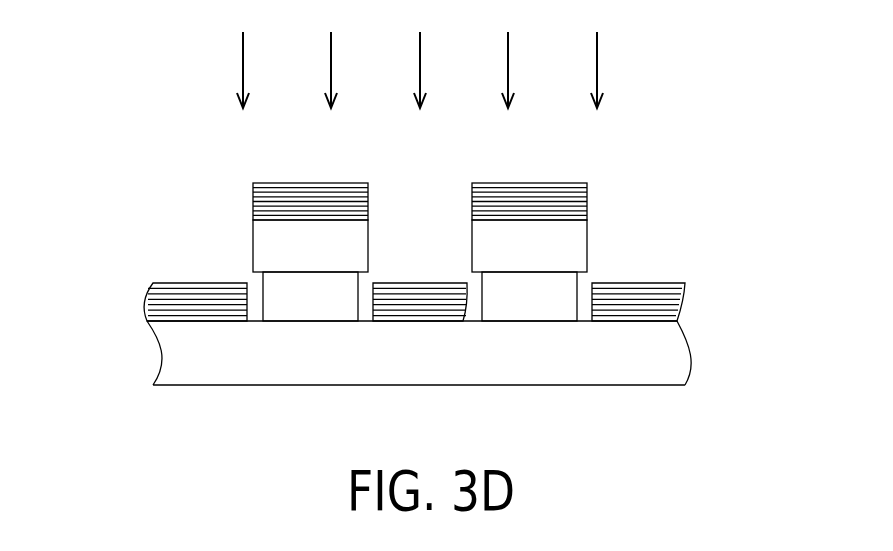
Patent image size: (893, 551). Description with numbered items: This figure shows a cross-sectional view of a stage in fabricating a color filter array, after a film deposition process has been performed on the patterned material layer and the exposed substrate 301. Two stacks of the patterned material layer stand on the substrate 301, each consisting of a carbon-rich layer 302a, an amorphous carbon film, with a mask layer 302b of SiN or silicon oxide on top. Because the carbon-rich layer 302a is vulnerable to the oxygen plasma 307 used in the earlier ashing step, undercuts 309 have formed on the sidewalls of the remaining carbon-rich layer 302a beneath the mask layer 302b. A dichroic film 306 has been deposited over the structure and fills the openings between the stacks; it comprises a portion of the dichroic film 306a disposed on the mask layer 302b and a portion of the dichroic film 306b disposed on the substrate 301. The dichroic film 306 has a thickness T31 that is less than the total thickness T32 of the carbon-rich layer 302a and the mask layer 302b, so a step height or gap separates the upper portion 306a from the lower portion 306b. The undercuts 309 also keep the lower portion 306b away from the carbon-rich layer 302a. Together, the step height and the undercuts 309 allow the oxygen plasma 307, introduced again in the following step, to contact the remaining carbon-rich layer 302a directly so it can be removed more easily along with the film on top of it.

The substrate 301 is at (686, 351).
The carbon-rich layer 302a is at (347, 314).
The mask layer 302b is at (347, 263).
The dichroic film 306 is at (103, 97).
The portion of the dichroic film disposed on the mask layer 306a is at (270, 183).
The portion of the dichroic film disposed on the substrate 306b is at (227, 283).
The oxygen plasma 307 is at (598, 72).
The undercuts 309 is at (262, 285).
The thickness of the dichroic film T31 is at (147, 321).
The total thickness of the carbon-rich layer and the mask layer T32 is at (587, 221).